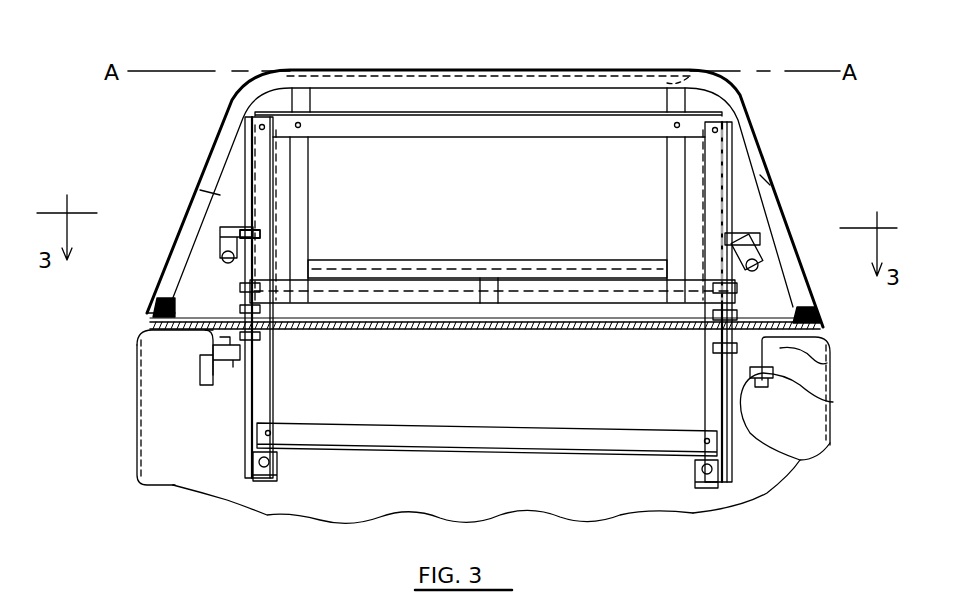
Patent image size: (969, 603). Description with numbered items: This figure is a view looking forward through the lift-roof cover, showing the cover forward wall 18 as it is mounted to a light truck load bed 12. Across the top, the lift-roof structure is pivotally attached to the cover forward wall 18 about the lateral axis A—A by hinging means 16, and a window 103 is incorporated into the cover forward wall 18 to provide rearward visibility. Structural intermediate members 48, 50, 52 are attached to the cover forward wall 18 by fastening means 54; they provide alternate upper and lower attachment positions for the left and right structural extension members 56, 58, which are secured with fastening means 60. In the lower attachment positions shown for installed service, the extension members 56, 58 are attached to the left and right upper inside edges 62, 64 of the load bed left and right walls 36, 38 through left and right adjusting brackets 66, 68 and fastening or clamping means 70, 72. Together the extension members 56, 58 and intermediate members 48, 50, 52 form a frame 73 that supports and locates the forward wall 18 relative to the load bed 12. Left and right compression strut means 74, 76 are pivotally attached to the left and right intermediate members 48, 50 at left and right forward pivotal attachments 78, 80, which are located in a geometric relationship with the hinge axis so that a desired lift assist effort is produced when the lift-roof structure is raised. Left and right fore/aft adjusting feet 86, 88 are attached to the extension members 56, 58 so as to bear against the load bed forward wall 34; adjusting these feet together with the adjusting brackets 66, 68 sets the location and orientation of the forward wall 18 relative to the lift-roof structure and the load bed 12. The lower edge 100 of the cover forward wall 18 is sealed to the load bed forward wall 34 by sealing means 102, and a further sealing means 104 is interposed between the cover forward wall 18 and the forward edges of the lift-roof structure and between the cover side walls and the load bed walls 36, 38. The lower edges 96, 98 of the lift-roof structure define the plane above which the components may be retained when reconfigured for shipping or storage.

The load bed 12 is at (137, 463).
The hinging means 16 is at (697, 68).
The cover forward wall 18 is at (212, 168).
The load bed forward wall 34 is at (580, 480).
The load bed left wall 36 is at (137, 413).
The load bed right wall 38 is at (830, 430).
The left structural intermediate member 48 is at (247, 200).
The right structural intermediate member 50 is at (735, 187).
The structural intermediate member 52 is at (565, 127).
The fastening means 54 is at (298, 125).
The left structural extension member 56 is at (297, 190).
The right structural extension member 58 is at (700, 167).
The fastening means 60 is at (257, 290).
The left upper inside edge 62 is at (210, 343).
The right upper inside edge 64 is at (827, 363).
The left adjusting bracket 66 is at (177, 483).
The right adjusting bracket 68 is at (795, 458).
The fastening or clamping means 70 is at (197, 377).
The fastening or clamping means 72 is at (833, 402).
The frame 73 is at (260, 163).
The left compression strut means 74 is at (217, 253).
The right compression strut means 76 is at (753, 257).
The left forward pivotal attachment 78 is at (253, 232).
The right forward pivotal attachment 80 is at (770, 200).
The left fore/aft adjusting foot 86 is at (267, 488).
The right fore/aft adjusting foot 88 is at (700, 488).
The lower edge 96 is at (143, 313).
The lower edge 98 is at (823, 330).
The lower edge 100 is at (473, 322).
The sealing means 102 is at (566, 330).
The window 103 is at (417, 147).
The sealing means 104 is at (198, 310).